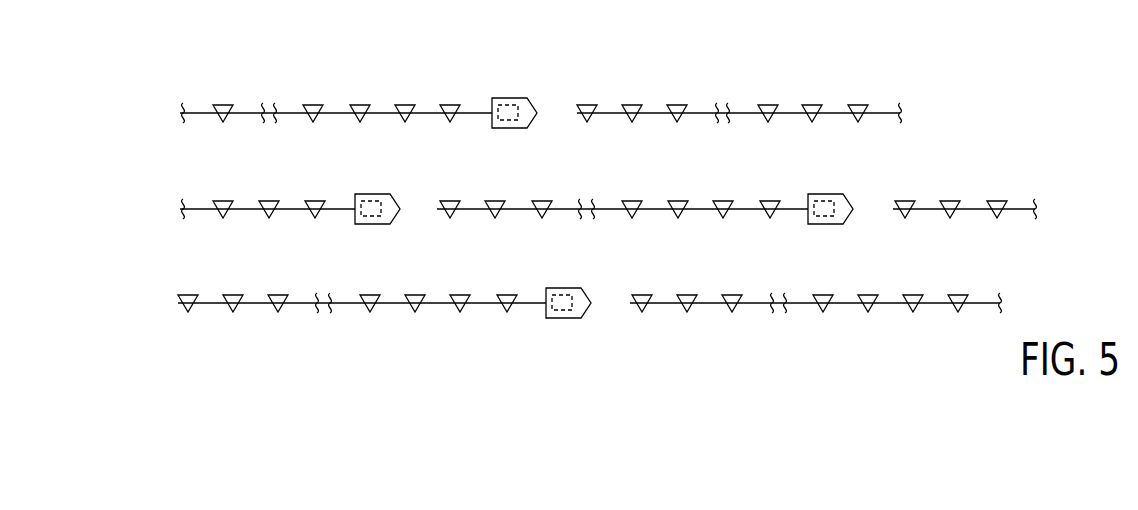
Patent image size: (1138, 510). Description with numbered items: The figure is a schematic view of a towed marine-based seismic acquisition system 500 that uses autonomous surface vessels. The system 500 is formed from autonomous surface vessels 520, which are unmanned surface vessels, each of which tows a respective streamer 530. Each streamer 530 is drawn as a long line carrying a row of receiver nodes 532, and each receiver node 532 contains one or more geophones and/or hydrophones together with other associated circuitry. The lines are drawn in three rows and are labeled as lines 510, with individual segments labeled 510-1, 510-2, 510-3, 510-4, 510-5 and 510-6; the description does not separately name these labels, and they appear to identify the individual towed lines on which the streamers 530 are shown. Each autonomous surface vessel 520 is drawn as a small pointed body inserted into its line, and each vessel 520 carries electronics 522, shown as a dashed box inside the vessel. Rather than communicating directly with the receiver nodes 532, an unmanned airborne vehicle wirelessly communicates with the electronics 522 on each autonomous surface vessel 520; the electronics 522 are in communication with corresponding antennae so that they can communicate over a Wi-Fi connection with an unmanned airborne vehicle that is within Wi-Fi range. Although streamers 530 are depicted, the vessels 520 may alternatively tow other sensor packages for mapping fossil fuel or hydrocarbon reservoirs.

The towed marine-based seismic acquisition system 500 is at (1008, 68).
The feed line 510 is at (438, 80).
The first feed line segment 510-1 is at (476, 83).
The second feed line segment 510-2 is at (662, 83).
The third feed line segment 510-3 is at (794, 179).
The fourth feed line segment 510-4 is at (1022, 179).
The fifth feed line segment 510-5 is at (530, 274).
The sixth feed line segment 510-6 is at (952, 274).
The autonomous surface vessel 520 is at (512, 128).
The electronics 522 is at (512, 106).
The streamer 530 is at (341, 113).
The receiver node 532 is at (400, 118).